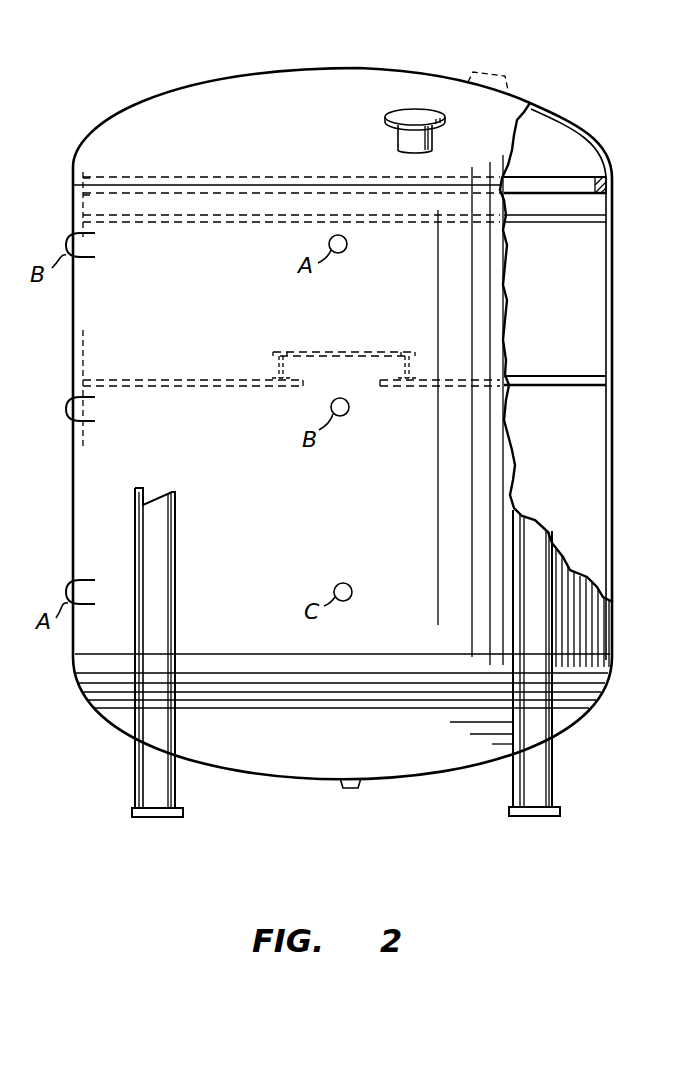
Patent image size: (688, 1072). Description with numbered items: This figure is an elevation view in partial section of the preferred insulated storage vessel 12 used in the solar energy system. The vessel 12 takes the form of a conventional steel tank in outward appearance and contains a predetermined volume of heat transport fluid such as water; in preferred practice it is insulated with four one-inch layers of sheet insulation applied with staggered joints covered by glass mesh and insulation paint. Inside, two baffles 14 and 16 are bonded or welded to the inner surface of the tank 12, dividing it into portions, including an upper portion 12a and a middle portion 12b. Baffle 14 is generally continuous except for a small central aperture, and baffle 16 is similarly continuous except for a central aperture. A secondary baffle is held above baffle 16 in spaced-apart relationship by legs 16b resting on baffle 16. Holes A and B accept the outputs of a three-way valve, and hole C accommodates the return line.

The storage vessel 12 is at (262, 45).
The upper portion of the tank 12a is at (566, 320).
The middle portion of the tank 12b is at (579, 487).
The baffle 14 is at (562, 222).
The baffle 16 is at (566, 380).
The legs 16b is at (412, 364).